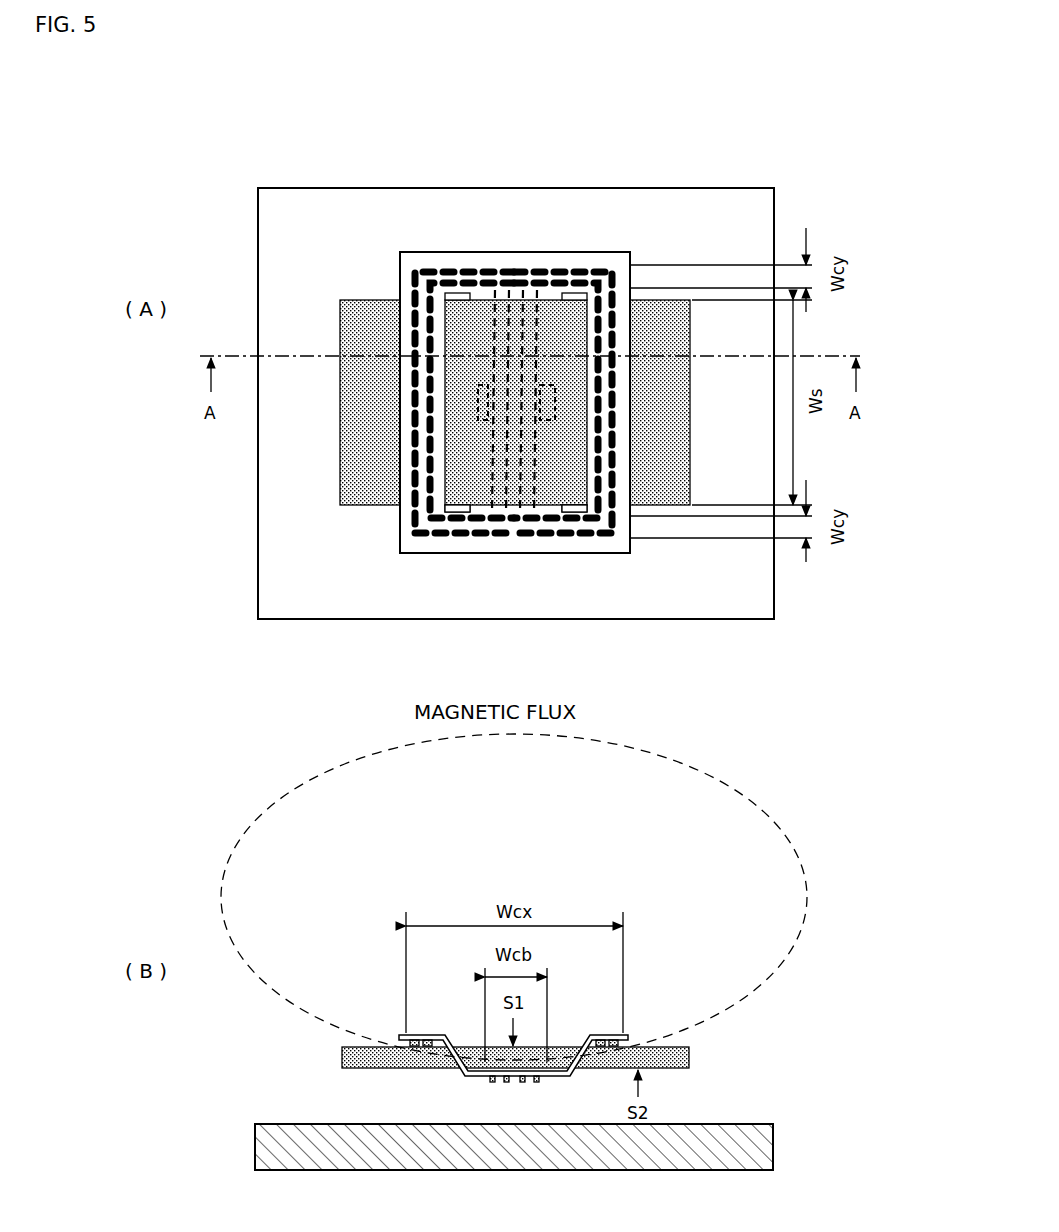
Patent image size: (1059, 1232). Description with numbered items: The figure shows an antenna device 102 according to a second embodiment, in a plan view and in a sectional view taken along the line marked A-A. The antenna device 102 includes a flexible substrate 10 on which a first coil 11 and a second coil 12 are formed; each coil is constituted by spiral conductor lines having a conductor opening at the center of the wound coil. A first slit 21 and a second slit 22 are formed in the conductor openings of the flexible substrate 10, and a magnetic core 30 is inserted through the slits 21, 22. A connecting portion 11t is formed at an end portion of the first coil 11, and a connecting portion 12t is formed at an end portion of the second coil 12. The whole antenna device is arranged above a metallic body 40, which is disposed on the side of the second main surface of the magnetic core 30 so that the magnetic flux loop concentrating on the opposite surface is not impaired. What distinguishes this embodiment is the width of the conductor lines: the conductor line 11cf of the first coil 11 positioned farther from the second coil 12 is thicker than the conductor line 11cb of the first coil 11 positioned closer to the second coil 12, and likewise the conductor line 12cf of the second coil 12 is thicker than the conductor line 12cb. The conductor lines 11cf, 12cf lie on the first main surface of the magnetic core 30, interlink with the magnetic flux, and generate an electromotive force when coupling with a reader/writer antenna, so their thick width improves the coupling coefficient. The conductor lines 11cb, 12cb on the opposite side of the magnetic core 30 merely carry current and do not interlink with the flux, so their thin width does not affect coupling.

The antenna device 102 is at (716, 134).
The metallic body 40 is at (774, 188).
The magnetic core 30 is at (692, 320).
The flexible substrate 10 is at (534, 639).
The first coil 11 is at (512, 244).
The second coil 12 is at (566, 368).
The first slit 21 is at (455, 520).
The second slit 22 is at (573, 520).
The connecting portion 11t is at (478, 402).
The connecting portion 12t is at (556, 402).
The conductor line 11cf is at (432, 472).
The conductor line 12cf is at (598, 472).
The conductor line 11cb is at (506, 1082).
The conductor line 12cb is at (523, 1082).